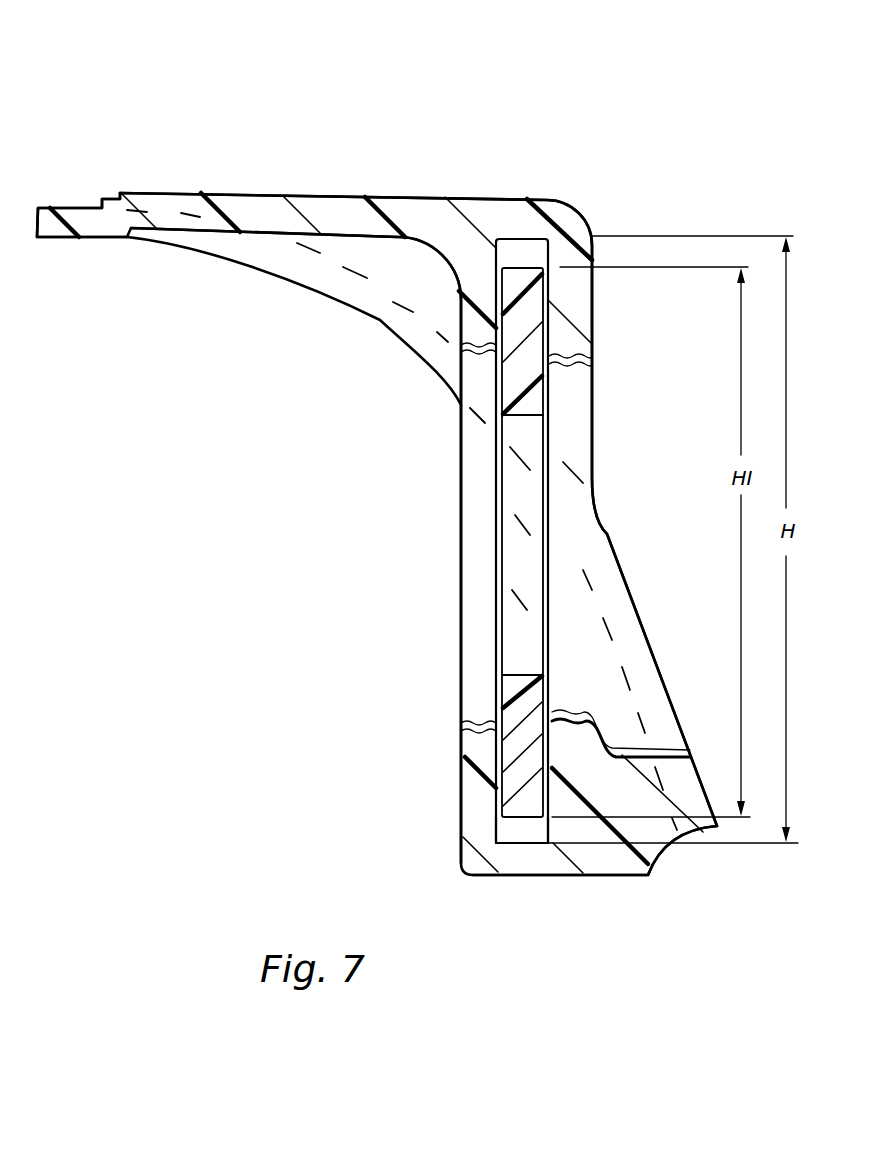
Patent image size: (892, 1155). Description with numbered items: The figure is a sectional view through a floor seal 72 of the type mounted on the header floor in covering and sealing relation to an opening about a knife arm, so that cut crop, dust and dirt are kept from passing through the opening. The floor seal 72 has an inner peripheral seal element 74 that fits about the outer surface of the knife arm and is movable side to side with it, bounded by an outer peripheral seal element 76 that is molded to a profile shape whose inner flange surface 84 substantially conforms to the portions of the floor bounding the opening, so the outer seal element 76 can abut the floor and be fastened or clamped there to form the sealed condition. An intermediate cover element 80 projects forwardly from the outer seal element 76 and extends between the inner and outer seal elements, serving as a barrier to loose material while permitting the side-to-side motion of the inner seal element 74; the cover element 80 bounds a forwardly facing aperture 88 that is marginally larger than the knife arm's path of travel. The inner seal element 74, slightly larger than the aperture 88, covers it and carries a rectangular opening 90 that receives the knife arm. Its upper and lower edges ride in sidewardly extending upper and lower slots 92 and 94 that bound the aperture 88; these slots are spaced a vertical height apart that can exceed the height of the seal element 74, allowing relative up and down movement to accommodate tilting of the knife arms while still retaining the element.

The floor seal 72 is at (406, 94).
The inner peripheral seal element 74 is at (540, 393).
The outer peripheral seal element 76 is at (72, 207).
The intermediate cover element 80 is at (490, 202).
The inner flange surface 84 is at (230, 262).
The forwardly facing aperture 88 is at (570, 427).
The rectangular opening 90 is at (520, 485).
The upper slot 92 is at (523, 253).
The lower slot 94 is at (518, 832).